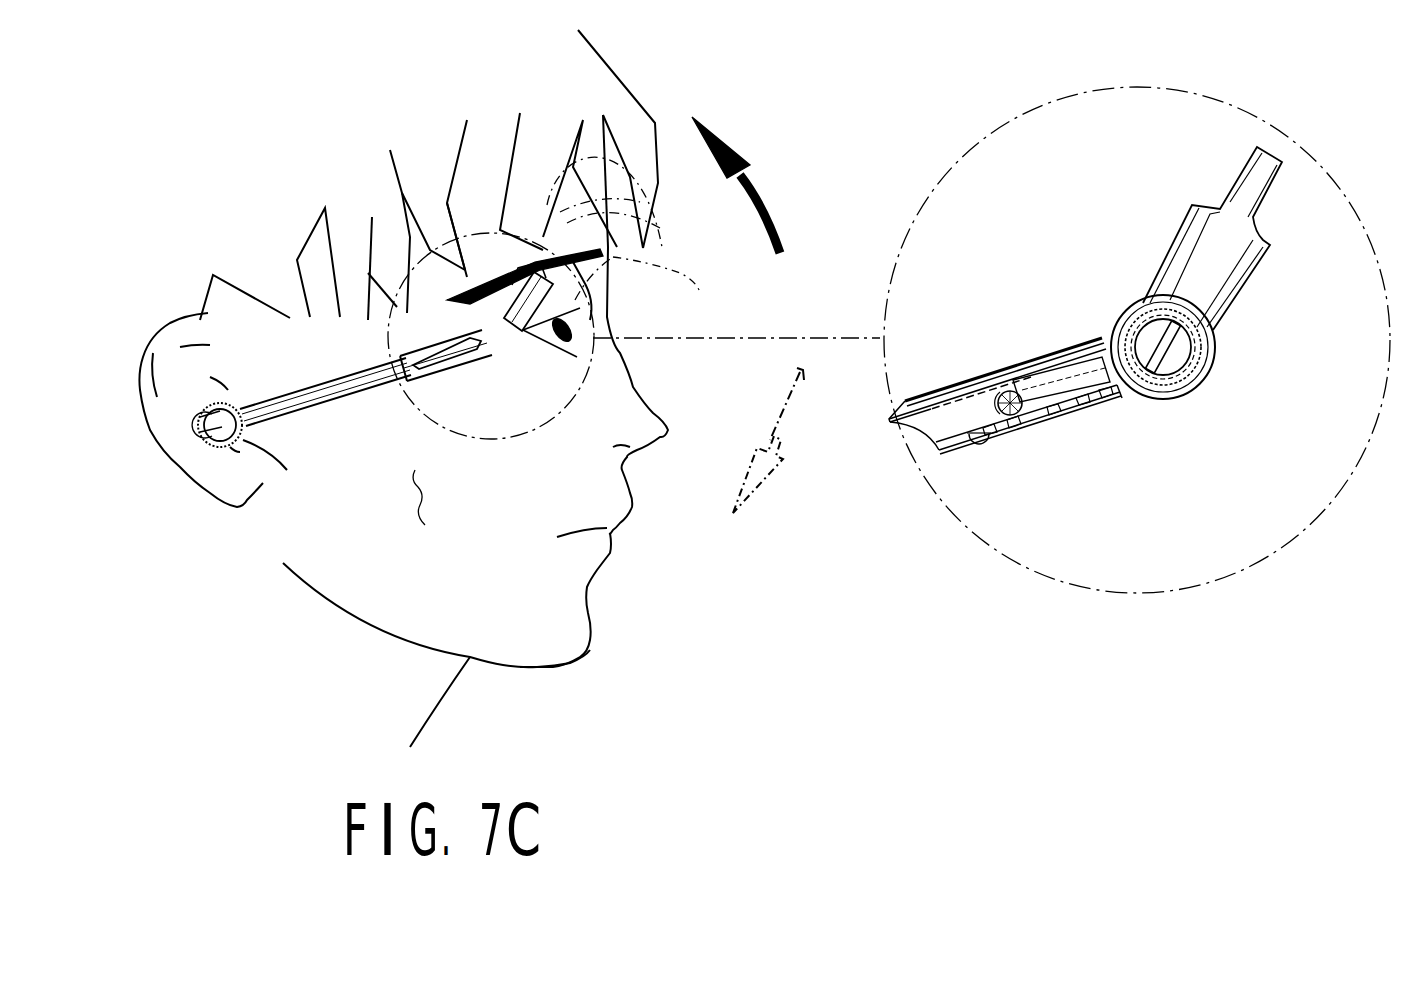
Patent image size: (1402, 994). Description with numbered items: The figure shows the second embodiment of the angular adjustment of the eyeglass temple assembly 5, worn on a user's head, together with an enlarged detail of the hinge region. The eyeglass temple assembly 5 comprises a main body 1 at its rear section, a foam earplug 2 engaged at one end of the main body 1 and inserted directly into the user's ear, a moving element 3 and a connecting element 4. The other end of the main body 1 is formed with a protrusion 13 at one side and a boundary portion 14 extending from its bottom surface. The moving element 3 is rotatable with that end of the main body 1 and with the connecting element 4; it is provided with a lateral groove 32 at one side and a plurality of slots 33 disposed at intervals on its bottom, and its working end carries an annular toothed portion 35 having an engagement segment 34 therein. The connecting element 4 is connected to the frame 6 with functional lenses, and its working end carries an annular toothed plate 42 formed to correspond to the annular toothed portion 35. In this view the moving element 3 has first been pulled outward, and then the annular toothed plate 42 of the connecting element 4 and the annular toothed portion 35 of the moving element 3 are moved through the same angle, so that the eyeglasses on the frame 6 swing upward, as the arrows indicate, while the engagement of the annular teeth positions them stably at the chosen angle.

The main body 1 is at (342, 405).
The foam earplug 2 is at (250, 432).
The moving element 3 is at (958, 385).
The connecting element 4 is at (510, 312).
The eyeglass temple assembly 5 is at (425, 516).
The frame 6 is at (667, 289).
The protrusion 13 is at (1005, 393).
The boundary portion 14 is at (978, 445).
The lateral groove 32 is at (1060, 387).
The slots 33 is at (1030, 428).
The engagement segment 34 is at (1178, 352).
The annular toothed portion 35 is at (1178, 396).
The annular toothed plate 42 is at (1160, 385).